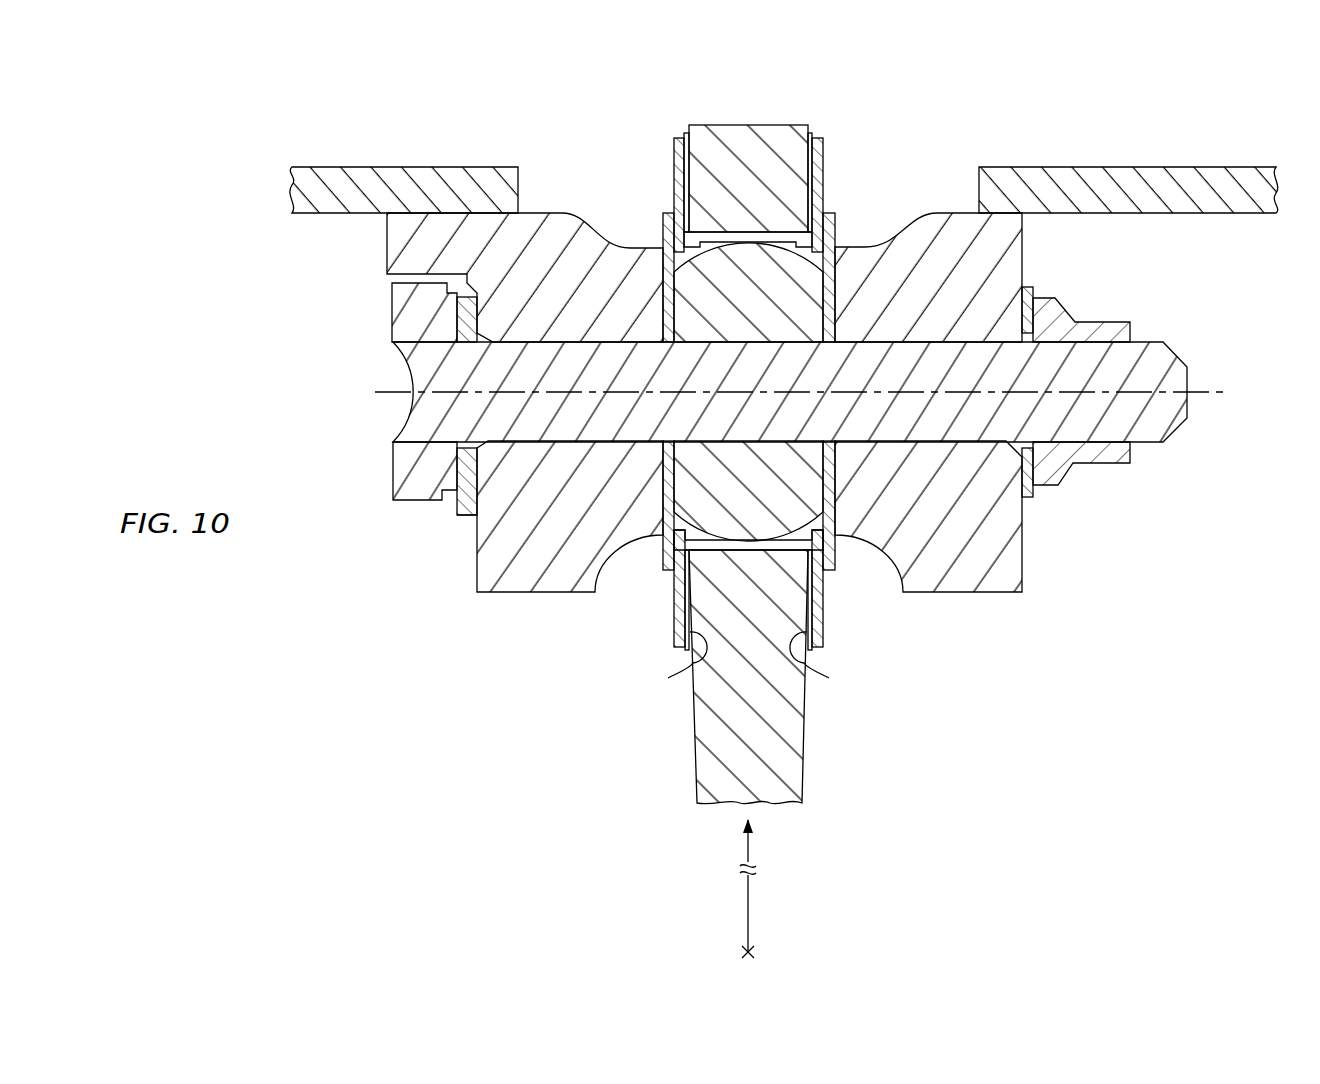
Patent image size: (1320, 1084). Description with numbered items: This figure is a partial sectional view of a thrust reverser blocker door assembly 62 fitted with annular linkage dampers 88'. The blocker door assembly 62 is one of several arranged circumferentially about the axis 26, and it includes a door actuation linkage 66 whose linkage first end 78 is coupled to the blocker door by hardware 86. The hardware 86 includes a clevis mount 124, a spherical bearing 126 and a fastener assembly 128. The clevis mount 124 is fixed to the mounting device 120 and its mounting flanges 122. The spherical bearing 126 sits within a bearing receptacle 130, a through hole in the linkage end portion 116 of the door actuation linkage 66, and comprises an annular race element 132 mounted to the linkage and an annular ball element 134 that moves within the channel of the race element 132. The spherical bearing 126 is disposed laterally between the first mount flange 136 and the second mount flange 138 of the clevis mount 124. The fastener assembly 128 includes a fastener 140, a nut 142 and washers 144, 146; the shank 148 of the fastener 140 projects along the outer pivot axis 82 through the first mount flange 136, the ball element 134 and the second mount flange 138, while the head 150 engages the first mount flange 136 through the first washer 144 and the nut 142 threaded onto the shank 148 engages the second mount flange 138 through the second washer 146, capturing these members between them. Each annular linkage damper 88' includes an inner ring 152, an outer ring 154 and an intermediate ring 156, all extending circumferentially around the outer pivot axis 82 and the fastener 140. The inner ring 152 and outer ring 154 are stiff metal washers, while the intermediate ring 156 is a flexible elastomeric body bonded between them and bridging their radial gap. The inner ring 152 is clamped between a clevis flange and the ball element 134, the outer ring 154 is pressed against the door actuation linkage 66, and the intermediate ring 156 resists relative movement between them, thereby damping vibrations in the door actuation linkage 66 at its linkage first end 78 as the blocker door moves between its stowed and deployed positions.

The axis 26 is at (745, 952).
The blocker door assembly 62 is at (958, 705).
The door actuation linkage 66 is at (796, 677).
The linkage first end 78 is at (760, 125).
The outer pivot axis 82 is at (1208, 393).
The hardware 86 is at (366, 410).
The annular linkage damper 88' is at (750, 146).
The linkage end portion 116 is at (815, 157).
The mounting device 120 is at (784, 128).
The mounting flanges 122 is at (388, 167).
The clevis mount 124 is at (702, 443).
The spherical bearing 126 is at (830, 295).
The fastener assembly 128 is at (380, 483).
The bearing receptacle 130 is at (752, 555).
The race element 132 is at (790, 242).
The ball element 134 is at (765, 308).
The first mount flange 136 is at (561, 553).
The second mount flange 138 is at (972, 547).
The fastener 140 is at (386, 340).
The nut 142 is at (1097, 318).
The first washer 144 is at (455, 520).
The second washer 146 is at (1030, 497).
The shank 148 is at (905, 422).
The head 150 is at (442, 472).
The inner ring 152 is at (660, 517).
The outer ring 154 is at (688, 663).
The intermediate ring 156 is at (670, 627).